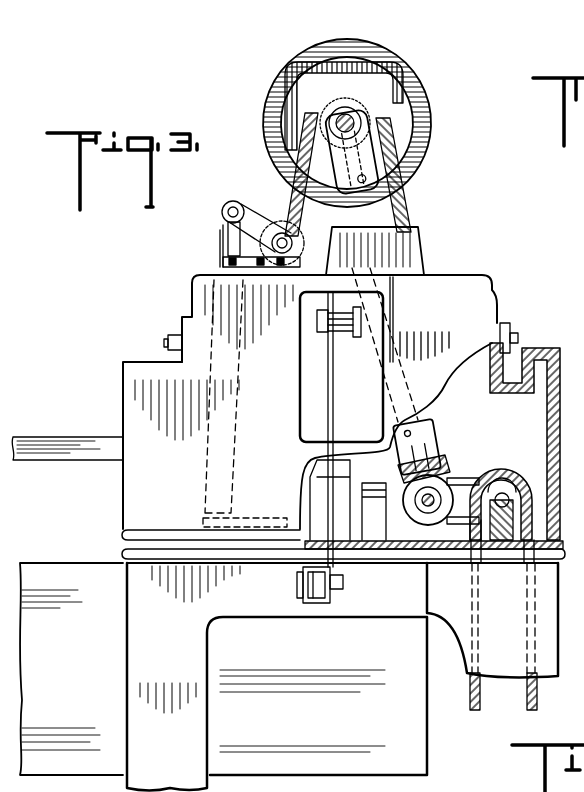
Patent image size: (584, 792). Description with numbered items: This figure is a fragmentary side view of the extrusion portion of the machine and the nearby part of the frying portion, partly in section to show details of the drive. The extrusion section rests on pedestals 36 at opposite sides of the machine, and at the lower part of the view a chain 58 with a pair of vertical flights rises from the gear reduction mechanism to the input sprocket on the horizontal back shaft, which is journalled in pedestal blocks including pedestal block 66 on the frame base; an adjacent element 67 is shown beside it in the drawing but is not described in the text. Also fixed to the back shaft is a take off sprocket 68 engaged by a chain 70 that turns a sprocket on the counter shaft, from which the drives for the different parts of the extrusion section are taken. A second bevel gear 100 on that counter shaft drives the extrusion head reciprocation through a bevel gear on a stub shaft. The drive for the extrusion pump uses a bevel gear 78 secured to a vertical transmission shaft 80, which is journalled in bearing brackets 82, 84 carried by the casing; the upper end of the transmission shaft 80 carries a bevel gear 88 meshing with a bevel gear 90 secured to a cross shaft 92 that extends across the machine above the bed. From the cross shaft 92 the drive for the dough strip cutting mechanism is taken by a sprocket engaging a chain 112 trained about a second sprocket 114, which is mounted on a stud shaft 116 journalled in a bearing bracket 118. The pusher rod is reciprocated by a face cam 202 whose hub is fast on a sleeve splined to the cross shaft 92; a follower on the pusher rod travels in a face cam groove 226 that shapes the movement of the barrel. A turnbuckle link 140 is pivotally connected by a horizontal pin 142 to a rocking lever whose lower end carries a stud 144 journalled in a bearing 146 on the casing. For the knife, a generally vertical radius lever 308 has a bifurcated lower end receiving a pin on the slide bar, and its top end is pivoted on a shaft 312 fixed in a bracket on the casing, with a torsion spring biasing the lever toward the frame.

The pedestals 36 is at (140, 652).
The chain 58 is at (540, 696).
The pedestal block 66 is at (513, 505).
The bearing 67 is at (530, 486).
The take off sprocket 68 is at (471, 520).
The chain 70 is at (478, 479).
The bevel gear 78 is at (447, 478).
The transmission shaft 80 is at (411, 217).
The bearing bracket 82 is at (428, 430).
The bearing bracket 84 is at (398, 184).
The bevel gear 88 is at (408, 146).
The bevel gear 90 is at (318, 112).
The cross shaft 92 is at (327, 108).
The second bevel gear 100 is at (404, 488).
The chain 112 is at (300, 163).
The second sprocket 114 is at (293, 197).
The stud shaft 116 is at (296, 247).
The bearing bracket 118 is at (218, 266).
The turnbuckle link 140 is at (360, 317).
The horizontal pin 142 is at (330, 413).
The stud 144 is at (302, 592).
The bearing 146 is at (314, 600).
The face cam 202 is at (433, 108).
The face cam groove 226 is at (400, 76).
The radius lever 308 is at (205, 476).
The shaft 312 is at (220, 207).